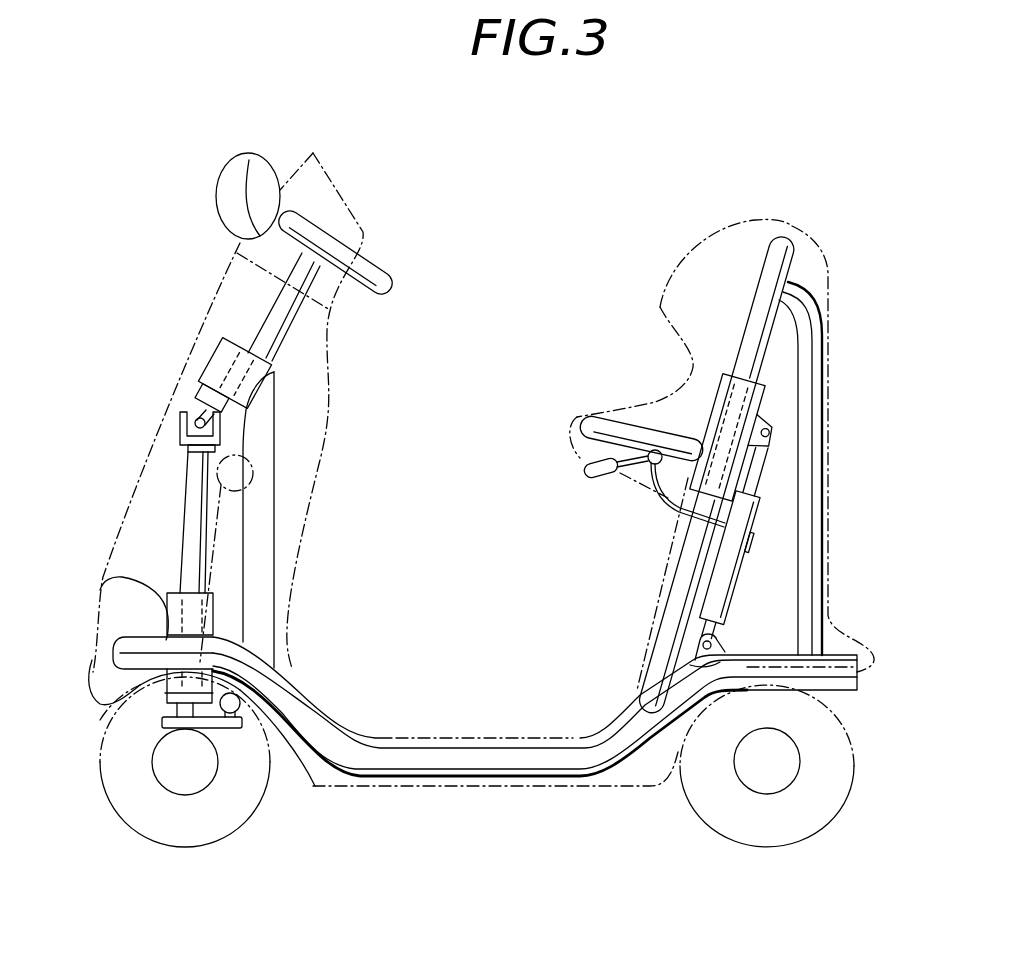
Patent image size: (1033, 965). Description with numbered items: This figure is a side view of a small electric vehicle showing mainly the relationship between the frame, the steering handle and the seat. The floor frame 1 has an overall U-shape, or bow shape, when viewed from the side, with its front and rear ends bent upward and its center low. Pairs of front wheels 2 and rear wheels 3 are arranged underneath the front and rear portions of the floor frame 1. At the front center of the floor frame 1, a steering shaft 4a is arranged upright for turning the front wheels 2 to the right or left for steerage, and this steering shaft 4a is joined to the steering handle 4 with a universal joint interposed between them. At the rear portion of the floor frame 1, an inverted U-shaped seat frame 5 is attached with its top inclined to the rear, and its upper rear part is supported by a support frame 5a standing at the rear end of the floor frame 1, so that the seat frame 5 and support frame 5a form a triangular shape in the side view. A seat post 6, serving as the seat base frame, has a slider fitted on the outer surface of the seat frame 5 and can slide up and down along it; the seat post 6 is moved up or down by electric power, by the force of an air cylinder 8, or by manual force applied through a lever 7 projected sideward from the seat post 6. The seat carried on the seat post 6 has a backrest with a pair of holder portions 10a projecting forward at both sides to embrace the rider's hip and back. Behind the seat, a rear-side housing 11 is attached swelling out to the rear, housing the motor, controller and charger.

The floor frame 1 is at (373, 760).
The front wheels 2 is at (120, 808).
The rear wheels 3 is at (847, 727).
The steering handle 4 is at (383, 274).
The steering shaft 4a is at (195, 482).
The seat frame 5 is at (668, 610).
The support frame 5a is at (812, 408).
The seat post 6 is at (603, 424).
The lever 7 is at (597, 480).
The air cylinder 8 is at (720, 563).
The holder portions 10a is at (680, 272).
The rear-side housing 11 is at (830, 515).